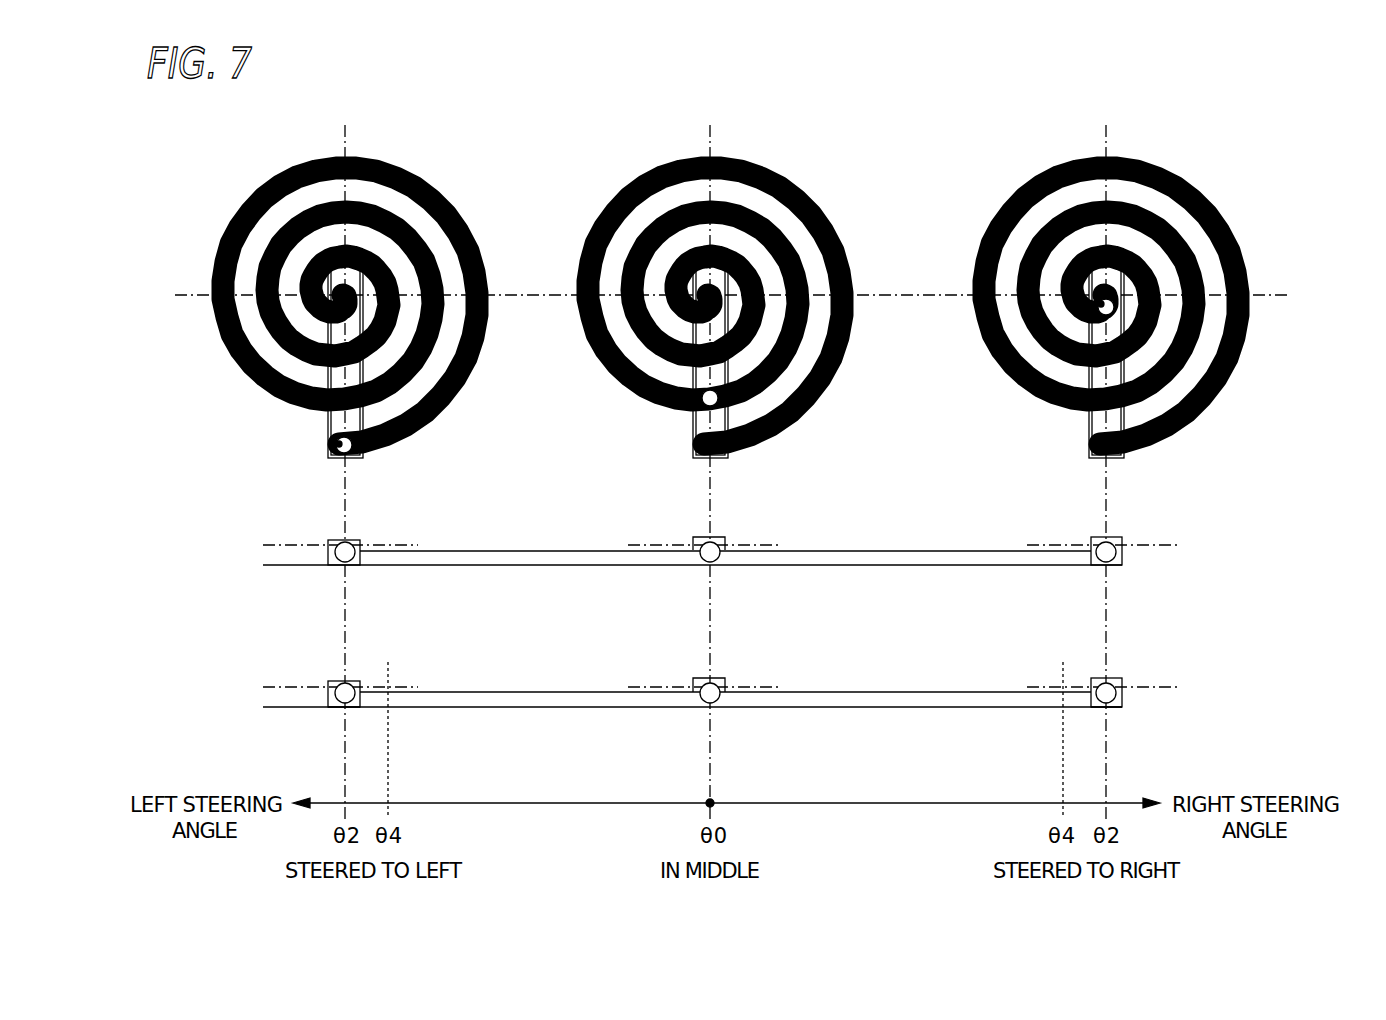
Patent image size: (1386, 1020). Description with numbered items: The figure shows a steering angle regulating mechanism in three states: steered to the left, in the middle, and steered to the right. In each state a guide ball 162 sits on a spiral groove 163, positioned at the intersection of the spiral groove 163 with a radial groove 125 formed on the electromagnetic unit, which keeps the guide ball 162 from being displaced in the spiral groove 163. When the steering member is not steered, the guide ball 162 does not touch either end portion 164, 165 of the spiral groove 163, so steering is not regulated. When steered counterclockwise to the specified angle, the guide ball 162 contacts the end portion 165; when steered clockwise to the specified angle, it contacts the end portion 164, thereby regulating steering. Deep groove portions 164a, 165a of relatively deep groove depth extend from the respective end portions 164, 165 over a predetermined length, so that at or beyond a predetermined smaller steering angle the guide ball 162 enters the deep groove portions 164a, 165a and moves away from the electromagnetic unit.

The radial groove 125 is at (364, 460).
The guide ball 162 is at (352, 444).
The spiral groove 163 is at (406, 190).
The end portion 164 is at (340, 309).
The deep groove portion 164a is at (1118, 712).
The end portion 165 is at (336, 446).
The deep groove portion 165a is at (333, 710).